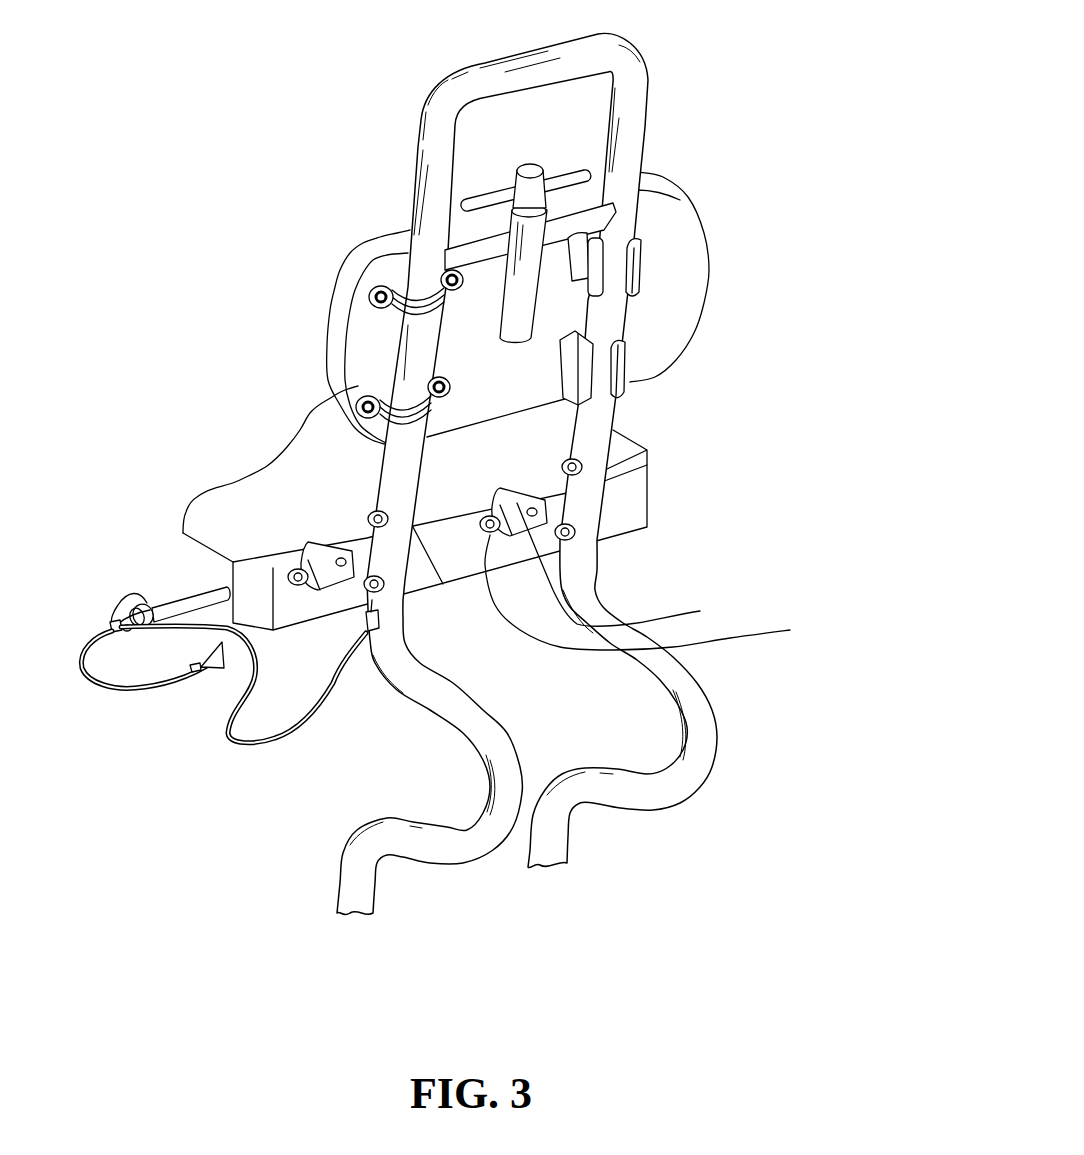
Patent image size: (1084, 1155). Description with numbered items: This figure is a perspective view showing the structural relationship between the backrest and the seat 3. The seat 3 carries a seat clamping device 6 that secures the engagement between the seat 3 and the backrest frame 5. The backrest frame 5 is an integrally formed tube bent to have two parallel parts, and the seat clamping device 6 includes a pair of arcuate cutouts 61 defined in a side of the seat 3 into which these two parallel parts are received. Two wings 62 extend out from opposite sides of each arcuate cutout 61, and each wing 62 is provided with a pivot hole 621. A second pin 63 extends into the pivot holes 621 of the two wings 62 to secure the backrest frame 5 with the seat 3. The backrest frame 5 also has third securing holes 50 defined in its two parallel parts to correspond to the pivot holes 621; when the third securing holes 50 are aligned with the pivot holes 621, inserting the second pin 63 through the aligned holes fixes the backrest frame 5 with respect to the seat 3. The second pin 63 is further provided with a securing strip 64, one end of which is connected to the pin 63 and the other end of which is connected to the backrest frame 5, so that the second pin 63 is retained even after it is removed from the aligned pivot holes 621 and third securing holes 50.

The seat 3 is at (203, 523).
The backrest frame 5 is at (590, 430).
The seat clamping device 6 is at (257, 343).
The third securing hole 50 is at (380, 621).
The arcuate cutout 61 is at (318, 550).
The wing 62 is at (296, 560).
The pivot hole 621 is at (660, 592).
The second pin 63 is at (178, 600).
The securing strip 64 is at (135, 688).